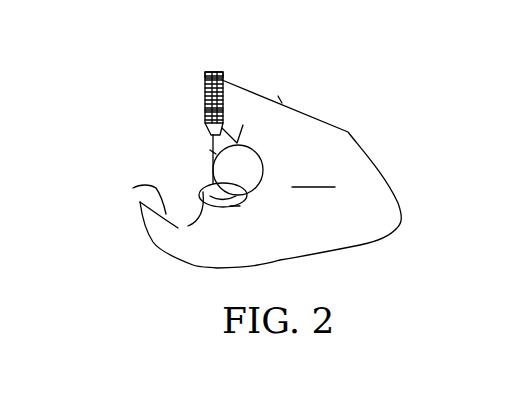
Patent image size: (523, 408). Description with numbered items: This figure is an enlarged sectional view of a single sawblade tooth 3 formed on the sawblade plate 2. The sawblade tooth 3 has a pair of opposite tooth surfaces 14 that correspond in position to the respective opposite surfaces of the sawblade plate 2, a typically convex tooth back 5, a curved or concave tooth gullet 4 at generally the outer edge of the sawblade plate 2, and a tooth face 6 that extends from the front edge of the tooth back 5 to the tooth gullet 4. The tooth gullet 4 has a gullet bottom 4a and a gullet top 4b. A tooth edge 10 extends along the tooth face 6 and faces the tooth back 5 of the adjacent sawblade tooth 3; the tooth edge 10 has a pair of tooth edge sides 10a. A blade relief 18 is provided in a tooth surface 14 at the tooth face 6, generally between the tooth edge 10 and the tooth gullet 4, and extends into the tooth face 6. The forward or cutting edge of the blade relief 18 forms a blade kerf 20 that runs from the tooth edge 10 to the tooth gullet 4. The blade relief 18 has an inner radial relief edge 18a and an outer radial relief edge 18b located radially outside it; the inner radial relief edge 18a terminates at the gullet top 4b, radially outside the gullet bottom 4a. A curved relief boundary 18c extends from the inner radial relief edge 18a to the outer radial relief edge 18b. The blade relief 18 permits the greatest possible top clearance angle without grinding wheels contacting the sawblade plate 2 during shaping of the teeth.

The sawblade plate 2 is at (176, 238).
The sawblade tooth 3 is at (326, 106).
The tooth gullet 4 is at (189, 214).
The gullet bottom 4a is at (190, 223).
The gullet top 4b is at (233, 200).
The tooth back 5 is at (133, 188).
The tooth face 6 is at (205, 117).
The tooth edge 10 is at (190, 91).
The tooth edge sides 10a is at (213, 72).
The tooth surfaces 14 is at (313, 173).
The blade relief 18 is at (204, 166).
The inner radial relief edge 18a is at (237, 205).
The outer radial relief edge 18b is at (238, 141).
The curved relief boundary 18c is at (258, 178).
The blade kerf 20 is at (210, 152).